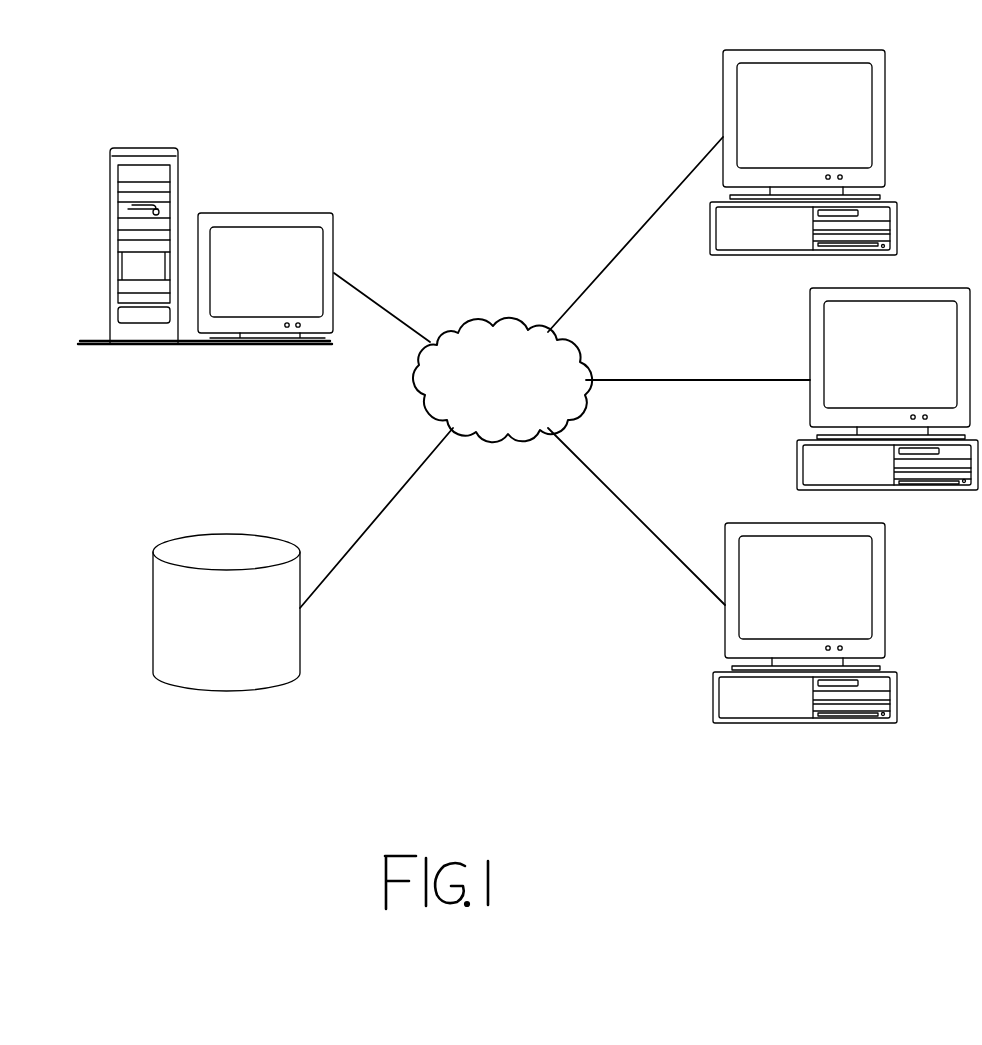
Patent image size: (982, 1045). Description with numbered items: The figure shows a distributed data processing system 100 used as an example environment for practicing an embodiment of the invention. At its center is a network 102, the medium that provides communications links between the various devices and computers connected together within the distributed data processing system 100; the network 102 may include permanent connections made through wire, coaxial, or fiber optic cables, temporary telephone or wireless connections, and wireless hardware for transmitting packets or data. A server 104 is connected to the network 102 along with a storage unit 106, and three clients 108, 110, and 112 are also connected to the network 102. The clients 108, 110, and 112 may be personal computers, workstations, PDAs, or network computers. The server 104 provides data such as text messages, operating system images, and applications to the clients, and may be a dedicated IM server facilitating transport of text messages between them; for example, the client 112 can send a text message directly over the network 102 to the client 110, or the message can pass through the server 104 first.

The distributed data processing system 100 is at (386, 108).
The network 102 is at (483, 410).
The server 104 is at (243, 282).
The storage unit 106 is at (208, 658).
The client 108 is at (782, 130).
The client 110 is at (870, 368).
The client 112 is at (783, 602).